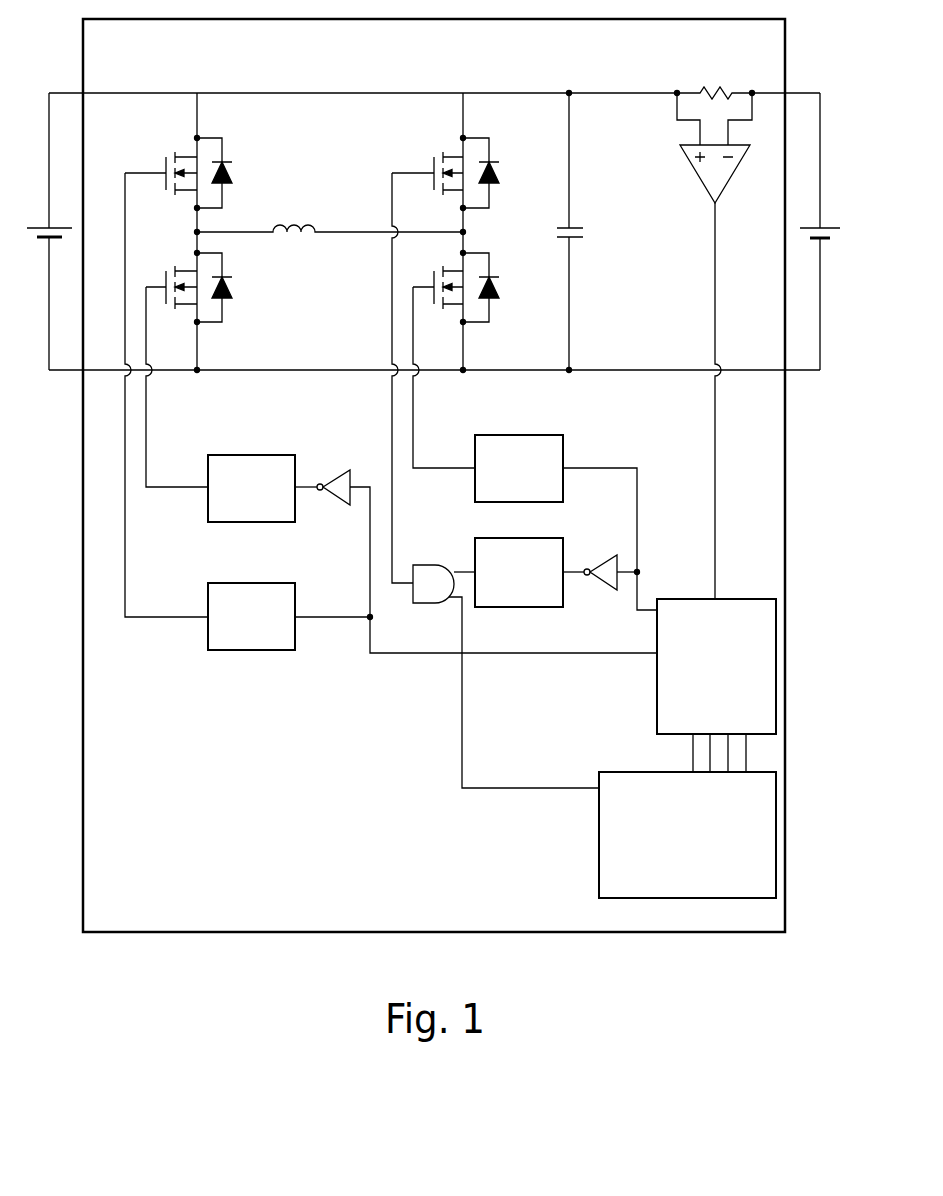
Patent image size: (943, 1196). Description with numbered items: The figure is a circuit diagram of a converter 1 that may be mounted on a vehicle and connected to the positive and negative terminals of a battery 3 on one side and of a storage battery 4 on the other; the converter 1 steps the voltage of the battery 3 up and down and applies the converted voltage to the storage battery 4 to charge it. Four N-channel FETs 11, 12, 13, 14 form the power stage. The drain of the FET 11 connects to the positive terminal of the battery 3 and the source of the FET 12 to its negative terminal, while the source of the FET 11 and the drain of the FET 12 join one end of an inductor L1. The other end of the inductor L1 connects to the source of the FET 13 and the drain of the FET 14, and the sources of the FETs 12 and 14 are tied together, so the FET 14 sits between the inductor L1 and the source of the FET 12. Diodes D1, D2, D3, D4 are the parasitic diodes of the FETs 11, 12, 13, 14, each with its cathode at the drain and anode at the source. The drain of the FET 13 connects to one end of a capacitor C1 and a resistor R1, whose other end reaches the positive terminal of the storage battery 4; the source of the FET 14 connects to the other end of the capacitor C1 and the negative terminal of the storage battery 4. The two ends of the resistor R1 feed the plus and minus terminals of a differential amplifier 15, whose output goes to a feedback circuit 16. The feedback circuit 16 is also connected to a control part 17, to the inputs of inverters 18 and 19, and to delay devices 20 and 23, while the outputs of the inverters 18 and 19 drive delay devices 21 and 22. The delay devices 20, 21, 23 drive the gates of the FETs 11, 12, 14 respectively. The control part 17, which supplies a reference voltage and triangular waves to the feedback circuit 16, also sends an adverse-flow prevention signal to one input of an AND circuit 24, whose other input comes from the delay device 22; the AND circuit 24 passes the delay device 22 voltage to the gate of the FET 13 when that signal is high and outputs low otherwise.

The converter 1 is at (83, 34).
The battery 3 is at (40, 220).
The storage battery 4 is at (830, 220).
The FET 11 is at (170, 147).
The FET 12 is at (170, 262).
The FET 13 is at (437, 147).
The FET 14 is at (428, 278).
The diode D1 is at (240, 170).
The diode D2 is at (240, 290).
The diode D3 is at (508, 170).
The diode D4 is at (508, 290).
The inductor L1 is at (307, 223).
The capacitor C1 is at (590, 230).
The resistor R1 is at (720, 85).
The differential amplifier 15 is at (698, 173).
The feedback circuit 16 is at (677, 595).
The control part 17 is at (672, 770).
The inverter 18 is at (340, 472).
The inverter 19 is at (602, 555).
The delay device 20 is at (218, 583).
The delay device 21 is at (218, 455).
The delay device 22 is at (487, 538).
The delay device 23 is at (487, 435).
The AND circuit 24 is at (418, 600).